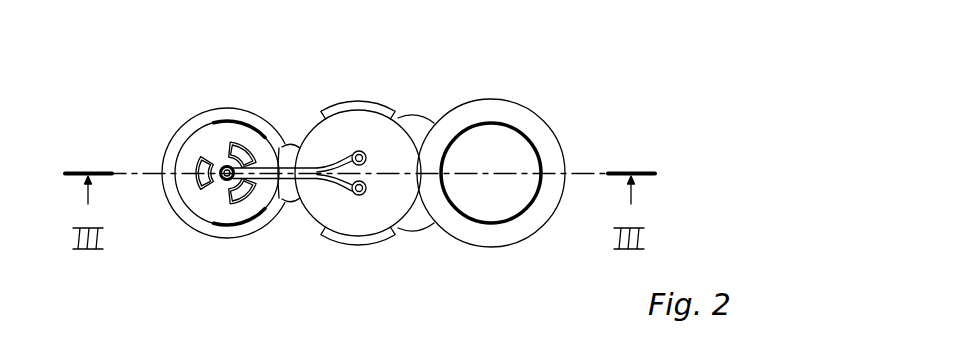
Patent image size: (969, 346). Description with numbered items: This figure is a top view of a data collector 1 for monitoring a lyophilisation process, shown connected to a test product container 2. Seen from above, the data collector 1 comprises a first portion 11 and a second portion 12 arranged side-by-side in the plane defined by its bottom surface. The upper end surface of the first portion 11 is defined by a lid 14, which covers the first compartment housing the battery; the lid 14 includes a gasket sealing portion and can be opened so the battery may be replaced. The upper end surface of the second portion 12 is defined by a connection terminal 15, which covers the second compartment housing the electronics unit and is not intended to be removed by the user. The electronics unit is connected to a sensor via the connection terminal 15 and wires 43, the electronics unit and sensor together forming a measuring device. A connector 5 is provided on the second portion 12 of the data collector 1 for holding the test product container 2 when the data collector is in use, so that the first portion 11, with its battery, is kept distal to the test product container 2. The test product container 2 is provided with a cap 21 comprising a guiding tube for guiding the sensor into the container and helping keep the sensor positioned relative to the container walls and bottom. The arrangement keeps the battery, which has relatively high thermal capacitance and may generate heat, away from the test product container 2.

The data collector 1 is at (520, 189).
The first portion 11 is at (470, 246).
The lid 14 is at (518, 145).
The second portion 12 is at (370, 188).
The connection terminal 15 is at (393, 137).
The connector 5 is at (293, 200).
The test product container 2 is at (217, 185).
The cap 21 is at (205, 138).
The wires 43 is at (273, 147).